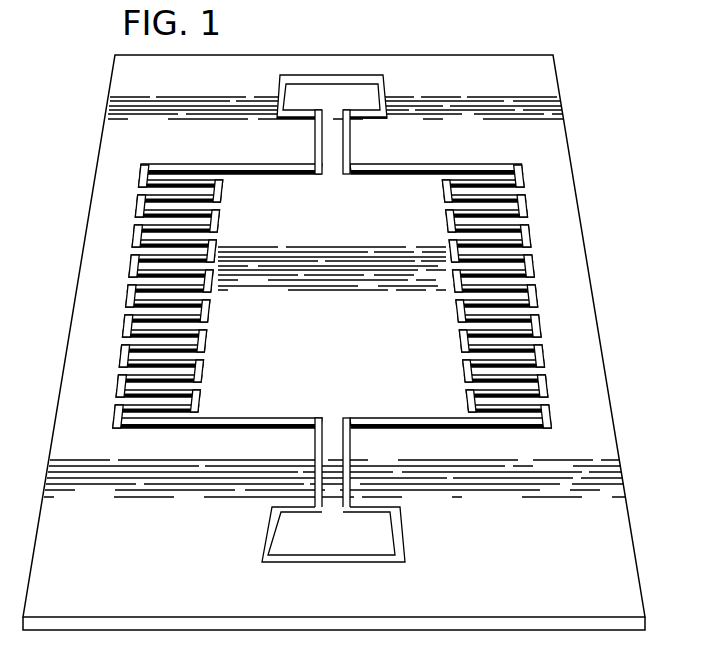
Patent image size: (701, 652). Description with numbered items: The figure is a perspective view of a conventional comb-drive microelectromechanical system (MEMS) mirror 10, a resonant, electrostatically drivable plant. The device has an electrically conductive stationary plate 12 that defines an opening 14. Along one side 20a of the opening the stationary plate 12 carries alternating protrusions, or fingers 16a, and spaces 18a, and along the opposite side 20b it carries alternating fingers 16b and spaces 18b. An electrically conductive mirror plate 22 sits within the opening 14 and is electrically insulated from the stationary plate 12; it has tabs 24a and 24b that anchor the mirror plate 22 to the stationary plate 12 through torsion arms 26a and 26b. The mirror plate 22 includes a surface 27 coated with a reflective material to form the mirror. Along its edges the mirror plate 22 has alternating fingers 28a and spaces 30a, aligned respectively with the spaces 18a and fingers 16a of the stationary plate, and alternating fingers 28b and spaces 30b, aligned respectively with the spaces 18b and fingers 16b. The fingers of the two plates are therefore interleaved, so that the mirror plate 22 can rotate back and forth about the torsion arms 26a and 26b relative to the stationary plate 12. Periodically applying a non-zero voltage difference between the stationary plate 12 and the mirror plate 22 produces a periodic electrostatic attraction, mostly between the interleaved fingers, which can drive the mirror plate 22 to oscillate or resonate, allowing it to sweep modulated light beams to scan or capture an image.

The comb-drive MEMS mirror 10 is at (337, 328).
The stationary plate 12 is at (565, 125).
The opening 14 is at (425, 160).
The fingers 16a is at (118, 406).
The fingers 16b is at (548, 405).
The spaces 18a is at (123, 386).
The spaces 18b is at (548, 386).
The side of the opening 20a is at (118, 283).
The opposite side of the opening 20b is at (548, 282).
The mirror plate 22 is at (348, 352).
The tab 24a is at (331, 93).
The tab 24b is at (303, 533).
The torsion arm 26a is at (332, 146).
The torsion arm 26b is at (333, 464).
The surface 27 is at (244, 190).
The fingers 28a is at (151, 176).
The fingers 28b is at (512, 178).
The spaces 30a is at (146, 208).
The spaces 30b is at (510, 207).